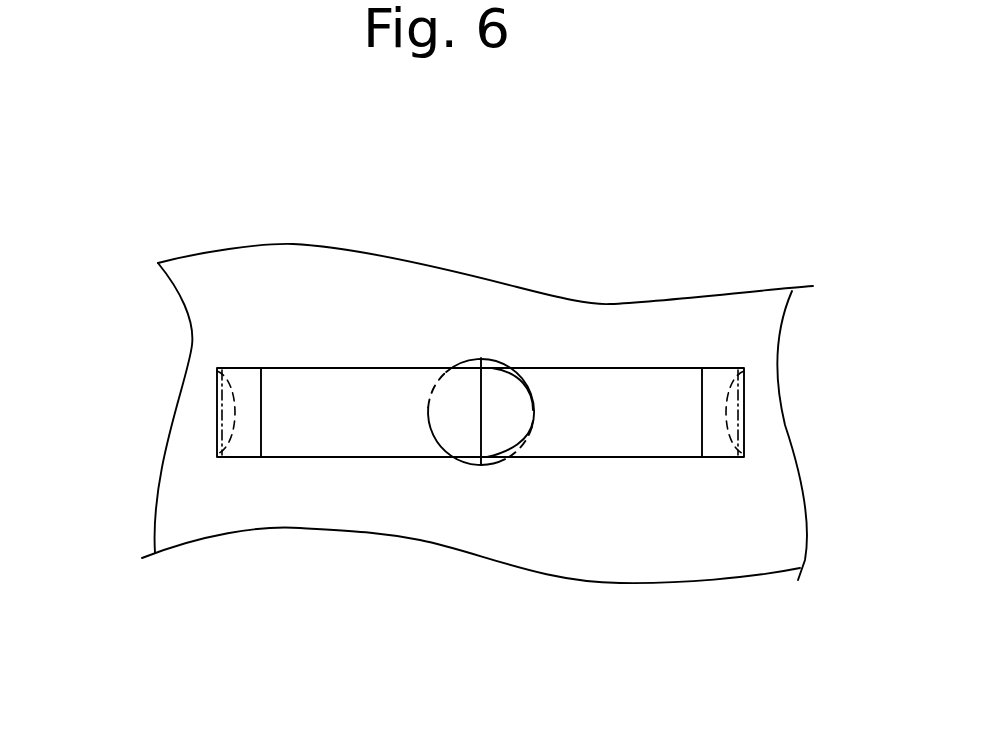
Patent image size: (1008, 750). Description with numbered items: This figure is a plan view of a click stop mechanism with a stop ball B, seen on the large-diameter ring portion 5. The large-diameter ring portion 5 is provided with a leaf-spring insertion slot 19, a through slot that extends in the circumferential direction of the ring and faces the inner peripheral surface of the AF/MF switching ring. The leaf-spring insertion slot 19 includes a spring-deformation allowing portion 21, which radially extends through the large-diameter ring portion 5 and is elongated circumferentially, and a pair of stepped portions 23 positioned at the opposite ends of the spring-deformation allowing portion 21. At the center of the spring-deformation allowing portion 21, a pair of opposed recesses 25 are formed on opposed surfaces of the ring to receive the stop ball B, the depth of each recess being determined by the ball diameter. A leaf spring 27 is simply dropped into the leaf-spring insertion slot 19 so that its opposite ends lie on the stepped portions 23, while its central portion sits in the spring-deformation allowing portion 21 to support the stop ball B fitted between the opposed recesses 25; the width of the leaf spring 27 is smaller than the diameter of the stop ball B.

The large-diameter ring portion 5 is at (455, 317).
The leaf-spring insertion slot 19 is at (608, 368).
The spring-deformation allowing portion 21 is at (335, 368).
The stepped portions 23 is at (238, 406).
The opposed recesses 25 is at (533, 410).
The leaf spring 27 is at (739, 424).
The stop ball B is at (431, 431).